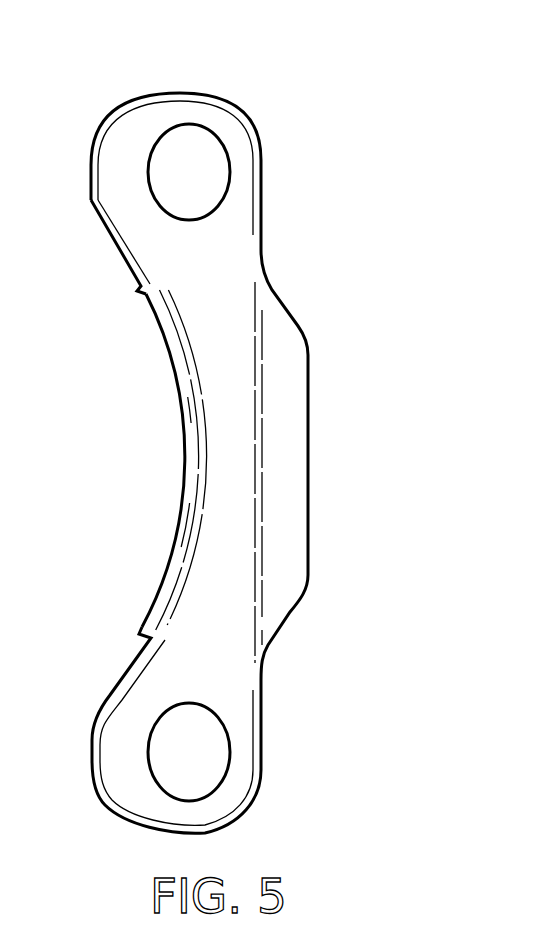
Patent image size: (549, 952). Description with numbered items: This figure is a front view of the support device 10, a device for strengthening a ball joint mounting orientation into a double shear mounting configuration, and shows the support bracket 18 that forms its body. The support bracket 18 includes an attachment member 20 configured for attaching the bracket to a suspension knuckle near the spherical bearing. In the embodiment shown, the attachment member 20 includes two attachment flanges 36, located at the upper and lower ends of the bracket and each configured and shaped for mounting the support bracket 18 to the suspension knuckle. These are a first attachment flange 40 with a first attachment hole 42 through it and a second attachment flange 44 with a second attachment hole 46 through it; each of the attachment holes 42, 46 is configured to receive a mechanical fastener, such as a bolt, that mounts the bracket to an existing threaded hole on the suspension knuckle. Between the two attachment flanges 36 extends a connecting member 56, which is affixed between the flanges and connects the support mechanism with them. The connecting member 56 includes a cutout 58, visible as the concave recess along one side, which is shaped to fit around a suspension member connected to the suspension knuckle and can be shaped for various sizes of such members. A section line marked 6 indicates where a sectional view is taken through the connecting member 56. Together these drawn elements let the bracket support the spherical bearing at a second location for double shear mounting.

The support device 10 is at (328, 80).
The attachment member 20 is at (298, 175).
The attachment flange 36 is at (280, 773).
The support bracket 18 is at (237, 322).
The first attachment flange 40 is at (128, 132).
The first attachment hole 42 is at (171, 125).
The second attachment flange 44 is at (120, 737).
The second attachment hole 46 is at (148, 775).
The connecting member 56 is at (226, 409).
The cutout 58 is at (157, 388).
The section line 6- 6 is at (290, 463).